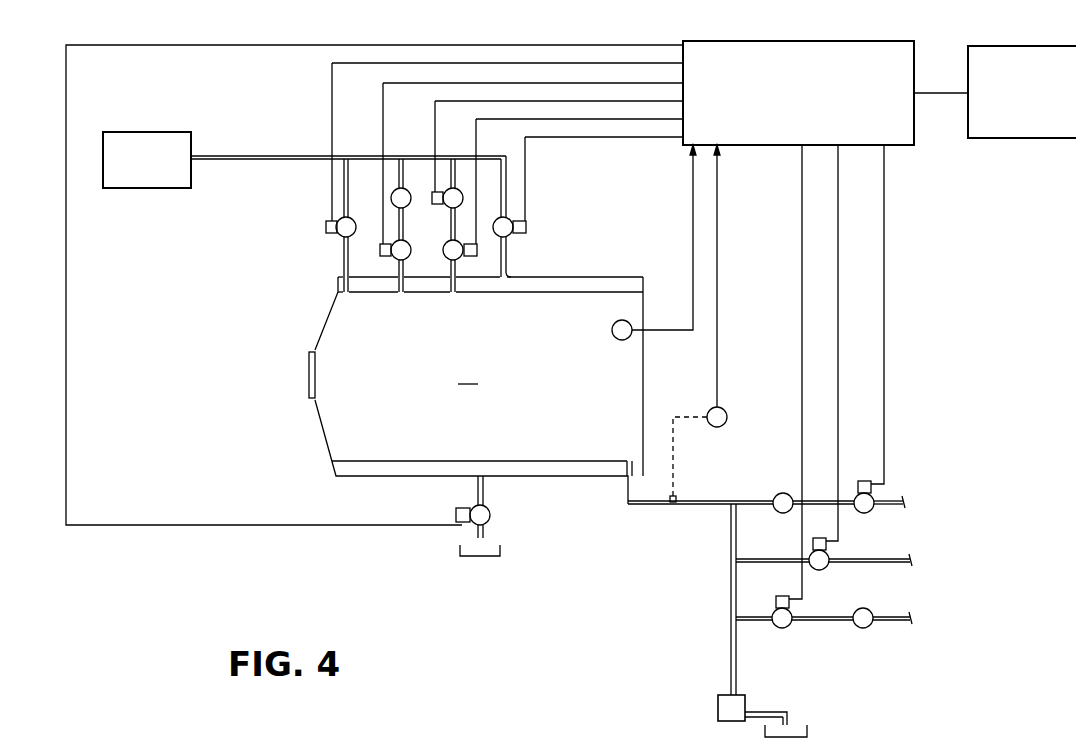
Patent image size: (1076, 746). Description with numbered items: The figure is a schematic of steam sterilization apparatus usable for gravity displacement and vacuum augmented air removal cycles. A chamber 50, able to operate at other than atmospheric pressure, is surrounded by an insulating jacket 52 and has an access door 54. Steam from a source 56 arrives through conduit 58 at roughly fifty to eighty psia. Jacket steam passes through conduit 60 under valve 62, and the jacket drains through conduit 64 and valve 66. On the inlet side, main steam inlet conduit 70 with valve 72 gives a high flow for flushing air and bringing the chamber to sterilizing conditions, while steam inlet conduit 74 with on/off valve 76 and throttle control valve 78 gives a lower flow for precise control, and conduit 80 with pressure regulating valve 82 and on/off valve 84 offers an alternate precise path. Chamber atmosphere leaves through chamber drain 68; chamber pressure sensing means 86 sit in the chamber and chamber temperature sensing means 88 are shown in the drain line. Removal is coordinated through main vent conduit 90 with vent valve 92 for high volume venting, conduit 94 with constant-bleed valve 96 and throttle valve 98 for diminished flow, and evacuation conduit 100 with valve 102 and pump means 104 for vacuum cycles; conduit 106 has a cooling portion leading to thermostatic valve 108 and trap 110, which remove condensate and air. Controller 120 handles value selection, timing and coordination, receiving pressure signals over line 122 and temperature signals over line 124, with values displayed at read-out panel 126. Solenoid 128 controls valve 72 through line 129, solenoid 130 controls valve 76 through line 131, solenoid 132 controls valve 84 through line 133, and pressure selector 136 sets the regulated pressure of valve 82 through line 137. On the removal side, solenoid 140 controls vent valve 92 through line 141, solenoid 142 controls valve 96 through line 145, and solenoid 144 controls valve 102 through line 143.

The chamber 50 is at (476, 378).
The insulating jacket 52 is at (601, 277).
The access door 54 is at (318, 418).
The steam source 56 is at (187, 131).
The conduit 58 is at (256, 153).
The jacket steam conduit 60 is at (508, 270).
The valve 62 is at (497, 221).
The jacket drain conduit 64 is at (486, 494).
The valve 66 is at (490, 522).
The chamber drain 68 is at (626, 492).
The main steam inlet conduit 70 is at (340, 236).
The valve 72 is at (356, 224).
The steam inlet conduit 74 is at (392, 292).
The valve 76 is at (411, 242).
The throttle control valve 78 is at (392, 194).
The conduit 80 is at (451, 292).
The valve 82 is at (449, 243).
The on/off valve 84 is at (462, 192).
The chamber pressure sensing means 86 is at (613, 334).
The chamber temperature sensing means 88 is at (727, 417).
The main vent conduit 90 is at (776, 558).
The vent valve 92 is at (828, 567).
The conduit 94 is at (757, 500).
The constant-bleed valve 96 is at (873, 511).
The throttle valve 98 is at (791, 490).
The evacuation conduit 100 is at (820, 624).
The valve 102 is at (776, 628).
The pump means 104 is at (866, 628).
The conduit 106 is at (730, 580).
The thermostatic valve 108 is at (718, 713).
The trap 110 is at (800, 714).
The controller 120 is at (785, 124).
The line 122 is at (692, 236).
The line 124 is at (717, 388).
The read-out panel 126 is at (1059, 139).
The solenoid 128 is at (325, 227).
The line 129 is at (332, 140).
The solenoid 130 is at (383, 255).
The line 131 is at (384, 140).
The solenoid 132 is at (431, 192).
The line 133 is at (436, 140).
The pressure selector 136 is at (476, 257).
The line 137 is at (478, 140).
The solenoid 140 is at (828, 544).
The line 141 is at (838, 355).
The solenoid 142 is at (856, 481).
The line 143 is at (802, 355).
The solenoid 144 is at (774, 600).
The line 145 is at (884, 355).